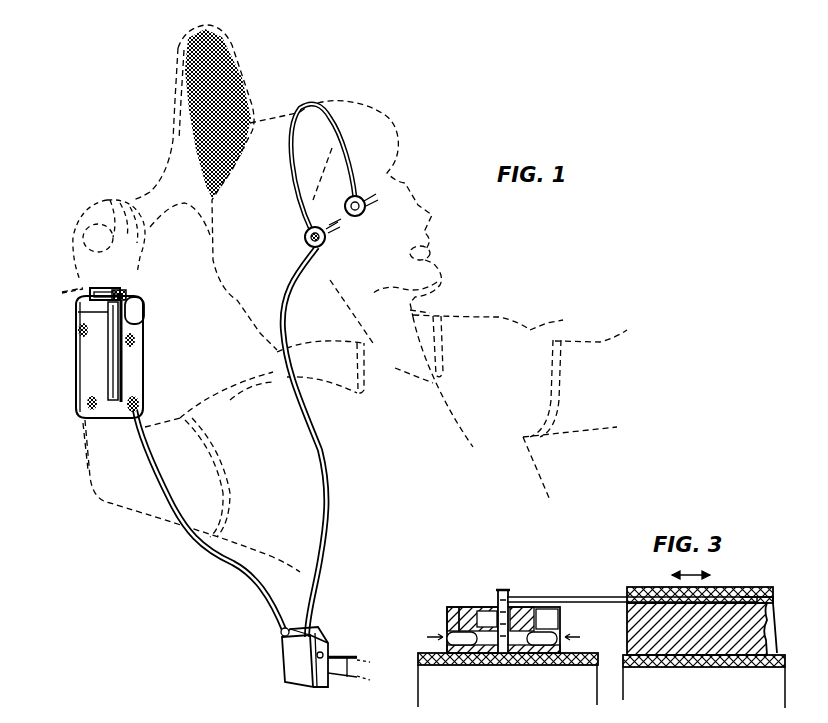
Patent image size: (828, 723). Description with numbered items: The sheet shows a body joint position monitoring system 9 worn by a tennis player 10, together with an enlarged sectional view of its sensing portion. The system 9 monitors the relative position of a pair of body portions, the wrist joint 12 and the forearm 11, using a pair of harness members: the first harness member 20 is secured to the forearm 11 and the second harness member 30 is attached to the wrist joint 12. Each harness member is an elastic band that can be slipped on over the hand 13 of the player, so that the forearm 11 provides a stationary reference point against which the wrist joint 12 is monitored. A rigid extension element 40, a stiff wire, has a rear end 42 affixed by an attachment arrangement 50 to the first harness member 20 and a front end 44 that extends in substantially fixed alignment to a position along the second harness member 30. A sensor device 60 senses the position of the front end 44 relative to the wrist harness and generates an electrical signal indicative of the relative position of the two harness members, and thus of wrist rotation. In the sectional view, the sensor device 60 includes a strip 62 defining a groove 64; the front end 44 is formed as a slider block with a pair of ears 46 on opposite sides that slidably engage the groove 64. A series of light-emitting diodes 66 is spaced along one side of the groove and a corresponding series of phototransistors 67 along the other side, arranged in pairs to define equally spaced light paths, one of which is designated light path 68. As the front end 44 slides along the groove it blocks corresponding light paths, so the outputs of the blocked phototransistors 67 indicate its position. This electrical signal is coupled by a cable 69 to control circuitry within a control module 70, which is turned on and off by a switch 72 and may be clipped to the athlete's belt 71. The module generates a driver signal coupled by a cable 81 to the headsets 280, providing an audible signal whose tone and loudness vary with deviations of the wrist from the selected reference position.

In FIG. 1, the body joint position monitoring system 9 is at (276, 661).
In FIG. 1, the tennis player 10 is at (548, 326).
In FIG. 1, the forearm 11 is at (80, 440).
In FIG. 1, the wrist joint 12 is at (81, 292).
In FIG. 1, the hand 13 is at (110, 199).
In FIG. 1, the first harness member 20 is at (88, 400).
In FIG. 3, the first harness member 20 is at (725, 668).
In FIG. 1, the second harness member 30 is at (88, 315).
In FIG. 3, the second harness member 30 is at (447, 664).
In FIG. 1, the rigid extension element 40 is at (135, 300).
In FIG. 3, the rigid extension element 40 is at (590, 597).
In FIG. 1, the rear end 42 is at (133, 403).
In FIG. 1, the front end 44 is at (118, 296).
In FIG. 3, the front end 44 is at (507, 590).
In FIG. 3, the ears 46 is at (490, 607).
In FIG. 1, the attachment arrangement 50 is at (125, 372).
In FIG. 3, the attachment arrangement 50 is at (745, 587).
In FIG. 1, the sensor device 60 is at (92, 288).
In FIG. 3, the strip 62 is at (452, 607).
In FIG. 3, the groove 64 is at (468, 607).
In FIG. 3, the light-emitting diodes 66 is at (447, 636).
In FIG. 3, the phototransistors 67 is at (557, 617).
In FIG. 3, the light path 68 is at (517, 640).
In FIG. 1, the cable 69 is at (272, 613).
In FIG. 1, the control module 70 is at (288, 660).
In FIG. 1, the belt 71 is at (340, 677).
In FIG. 1, the switch 72 is at (322, 655).
In FIG. 1, the cable 81 is at (300, 400).
In FIG. 1, the headsets 280 is at (305, 238).